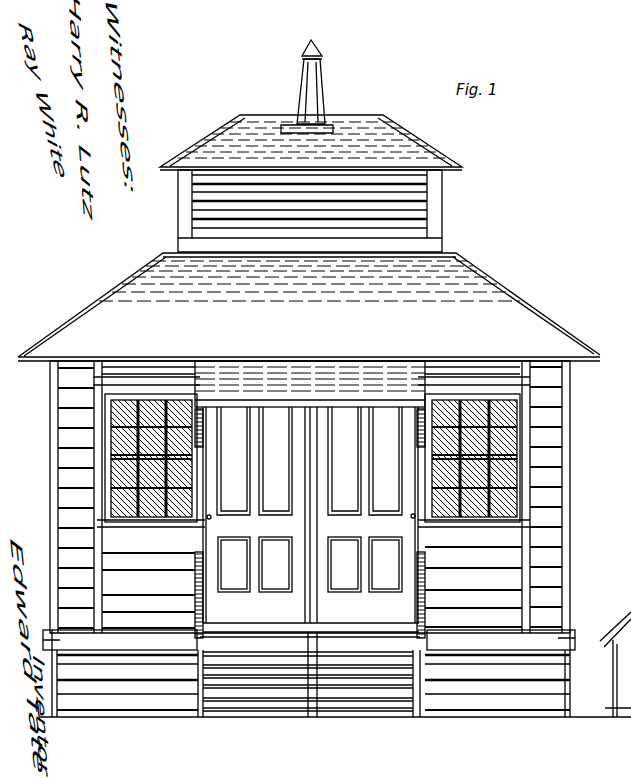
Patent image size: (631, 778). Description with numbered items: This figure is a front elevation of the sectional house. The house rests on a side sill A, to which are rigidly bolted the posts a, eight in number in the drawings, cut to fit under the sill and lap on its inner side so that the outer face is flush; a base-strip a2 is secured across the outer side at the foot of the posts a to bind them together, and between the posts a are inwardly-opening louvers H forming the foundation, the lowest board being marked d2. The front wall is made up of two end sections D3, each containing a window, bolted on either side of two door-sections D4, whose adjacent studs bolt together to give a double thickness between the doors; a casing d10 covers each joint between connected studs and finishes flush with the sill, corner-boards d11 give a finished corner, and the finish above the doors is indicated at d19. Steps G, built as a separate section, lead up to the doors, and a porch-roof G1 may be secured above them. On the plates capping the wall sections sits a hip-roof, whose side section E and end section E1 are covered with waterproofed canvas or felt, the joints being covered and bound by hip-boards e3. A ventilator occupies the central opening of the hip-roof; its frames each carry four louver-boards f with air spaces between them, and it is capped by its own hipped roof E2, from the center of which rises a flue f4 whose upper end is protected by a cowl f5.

The cowl f5 is at (318, 42).
The flue f4 is at (320, 80).
The cupola roof E2 is at (397, 140).
The end section of hip-roof E1 is at (433, 208).
The louver-board f is at (210, 192).
The hip-board e3 is at (72, 327).
The side section of hip-roof E is at (283, 326).
The corner-board d11 is at (57, 487).
The casing d10 is at (58, 540).
The end section of front wall D3 is at (78, 521).
The door header d19 is at (323, 403).
The porch-roof G1 is at (311, 422).
The door-section D4 is at (340, 600).
The side sill A is at (533, 648).
The steps G is at (309, 691).
The louver H is at (128, 687).
The bottom board d2 is at (155, 707).
The base-strip a2 is at (503, 710).
The post a is at (563, 695).